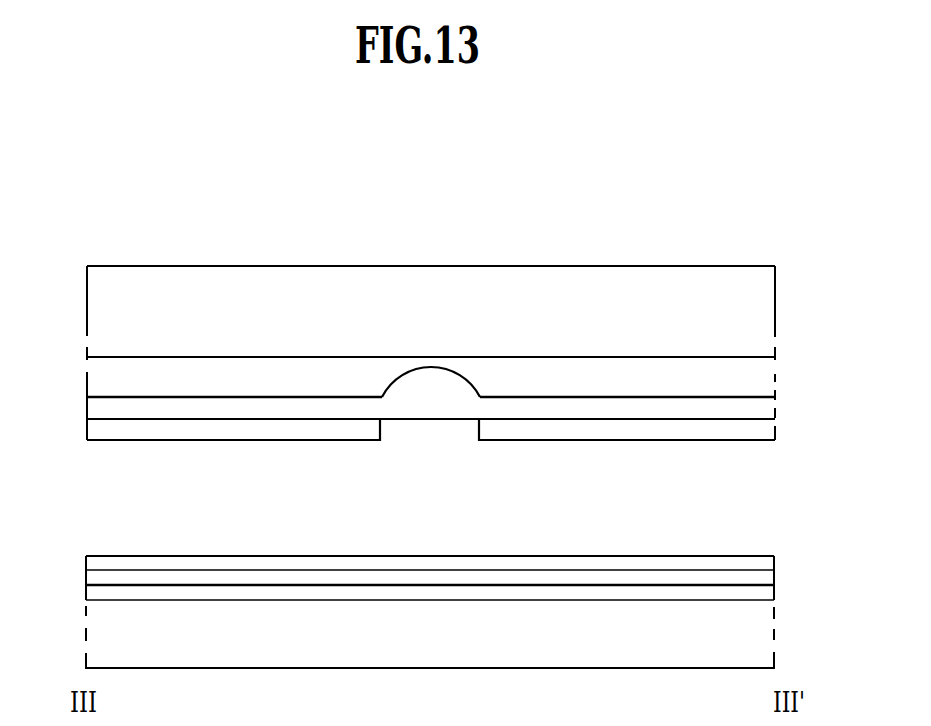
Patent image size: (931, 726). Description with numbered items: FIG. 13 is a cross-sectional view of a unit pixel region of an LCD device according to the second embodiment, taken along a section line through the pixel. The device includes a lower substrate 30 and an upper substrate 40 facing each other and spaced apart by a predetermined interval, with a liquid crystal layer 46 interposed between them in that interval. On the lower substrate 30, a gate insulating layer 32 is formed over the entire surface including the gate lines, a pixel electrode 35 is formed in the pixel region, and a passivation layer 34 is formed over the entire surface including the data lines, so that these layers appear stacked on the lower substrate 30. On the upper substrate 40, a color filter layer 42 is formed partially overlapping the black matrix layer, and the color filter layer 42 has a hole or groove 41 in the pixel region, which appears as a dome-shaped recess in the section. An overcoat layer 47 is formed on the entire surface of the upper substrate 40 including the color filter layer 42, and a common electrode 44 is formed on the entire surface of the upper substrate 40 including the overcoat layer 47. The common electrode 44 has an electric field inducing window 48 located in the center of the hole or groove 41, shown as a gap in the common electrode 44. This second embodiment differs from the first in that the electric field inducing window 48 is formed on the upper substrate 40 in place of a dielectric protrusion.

The lower substrate 30 is at (770, 632).
The gate insulating layer 32 is at (773, 591).
The passivation layer 34 is at (97, 575).
The pixel electrode 35 is at (773, 559).
The upper substrate 40 is at (770, 312).
The hole or groove 41 is at (440, 369).
The color filter layer 42 is at (770, 362).
The common electrode 44 is at (770, 433).
The liquid crystal layer 46 is at (767, 499).
The overcoat layer 47 is at (98, 407).
The electric field inducing window 48 is at (443, 432).